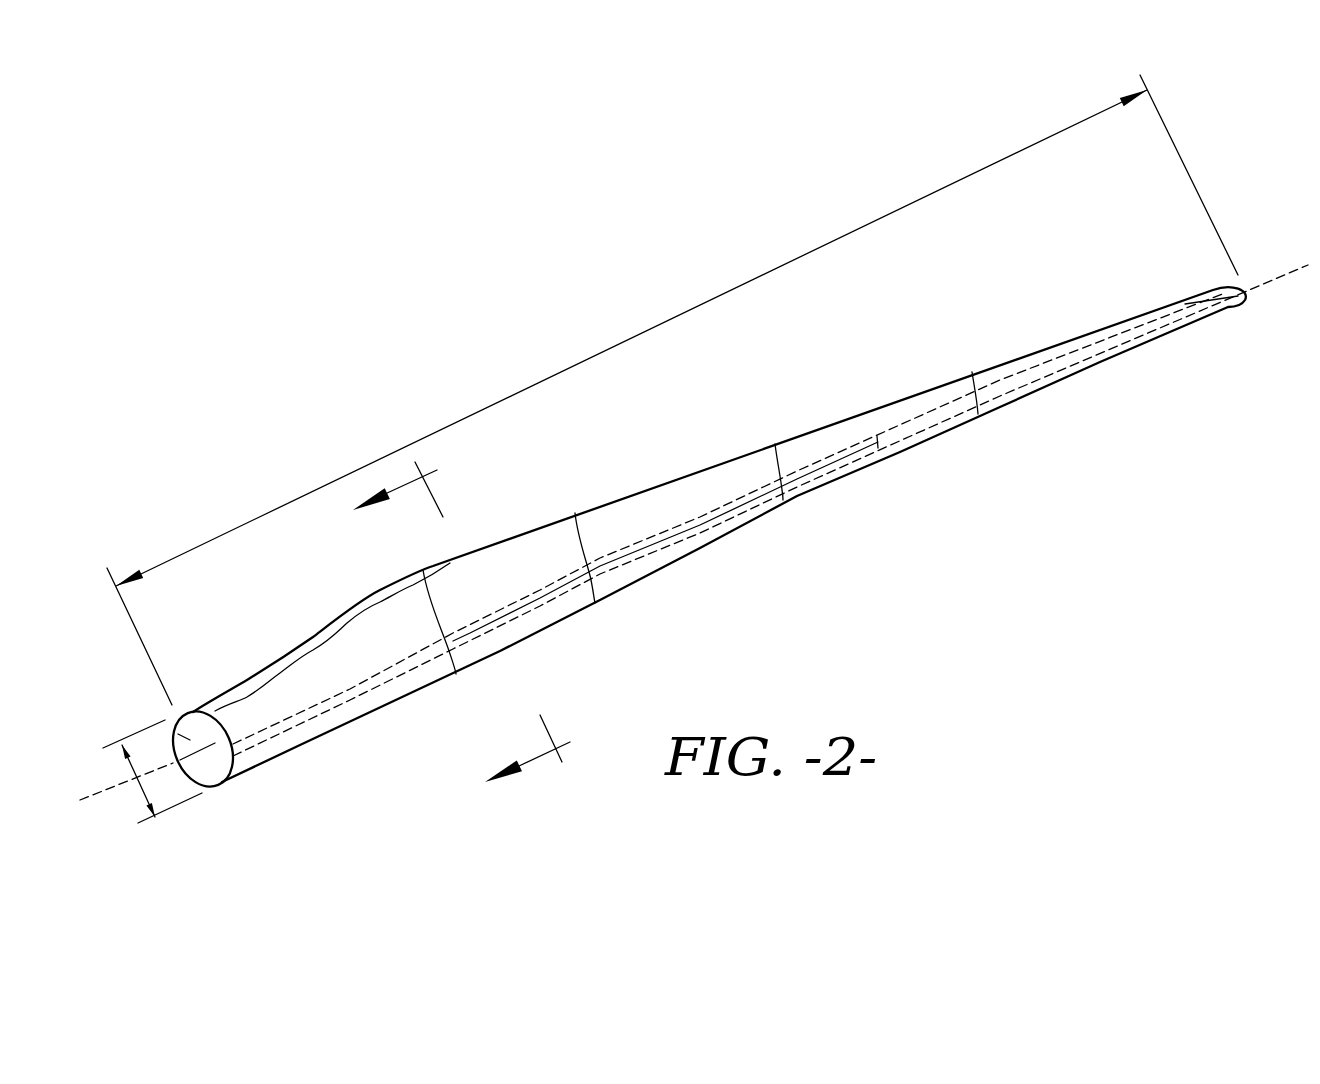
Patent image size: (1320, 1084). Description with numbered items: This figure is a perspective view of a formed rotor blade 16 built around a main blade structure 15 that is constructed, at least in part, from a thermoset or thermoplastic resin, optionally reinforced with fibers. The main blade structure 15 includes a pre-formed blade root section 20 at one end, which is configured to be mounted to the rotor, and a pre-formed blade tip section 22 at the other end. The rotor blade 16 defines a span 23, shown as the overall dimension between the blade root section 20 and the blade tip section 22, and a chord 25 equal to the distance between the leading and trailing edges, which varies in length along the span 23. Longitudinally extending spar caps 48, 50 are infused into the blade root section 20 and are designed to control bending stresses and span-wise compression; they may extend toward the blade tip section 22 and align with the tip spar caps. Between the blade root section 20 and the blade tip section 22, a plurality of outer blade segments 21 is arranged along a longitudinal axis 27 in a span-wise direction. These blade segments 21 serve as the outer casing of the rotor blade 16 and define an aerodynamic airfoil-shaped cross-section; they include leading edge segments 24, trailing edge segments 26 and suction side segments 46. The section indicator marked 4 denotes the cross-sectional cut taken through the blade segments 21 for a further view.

The rotor blade 16 is at (370, 352).
The blade root section 20 is at (212, 697).
The blade tip section 22 is at (1118, 358).
The span 23 is at (648, 329).
The leading edge segments 24 is at (496, 656).
The trailing edge segments 26 is at (507, 553).
The outer blade segments 21 is at (445, 560).
The chord 25 is at (163, 768).
The longitudinal axis 27 is at (180, 806).
The suction side segments 46 is at (927, 402).
The spar cap 48 is at (173, 742).
The spar cap 50 is at (313, 712).
The main blade structure 15 is at (372, 693).
The section line 4- 4 is at (445, 632).